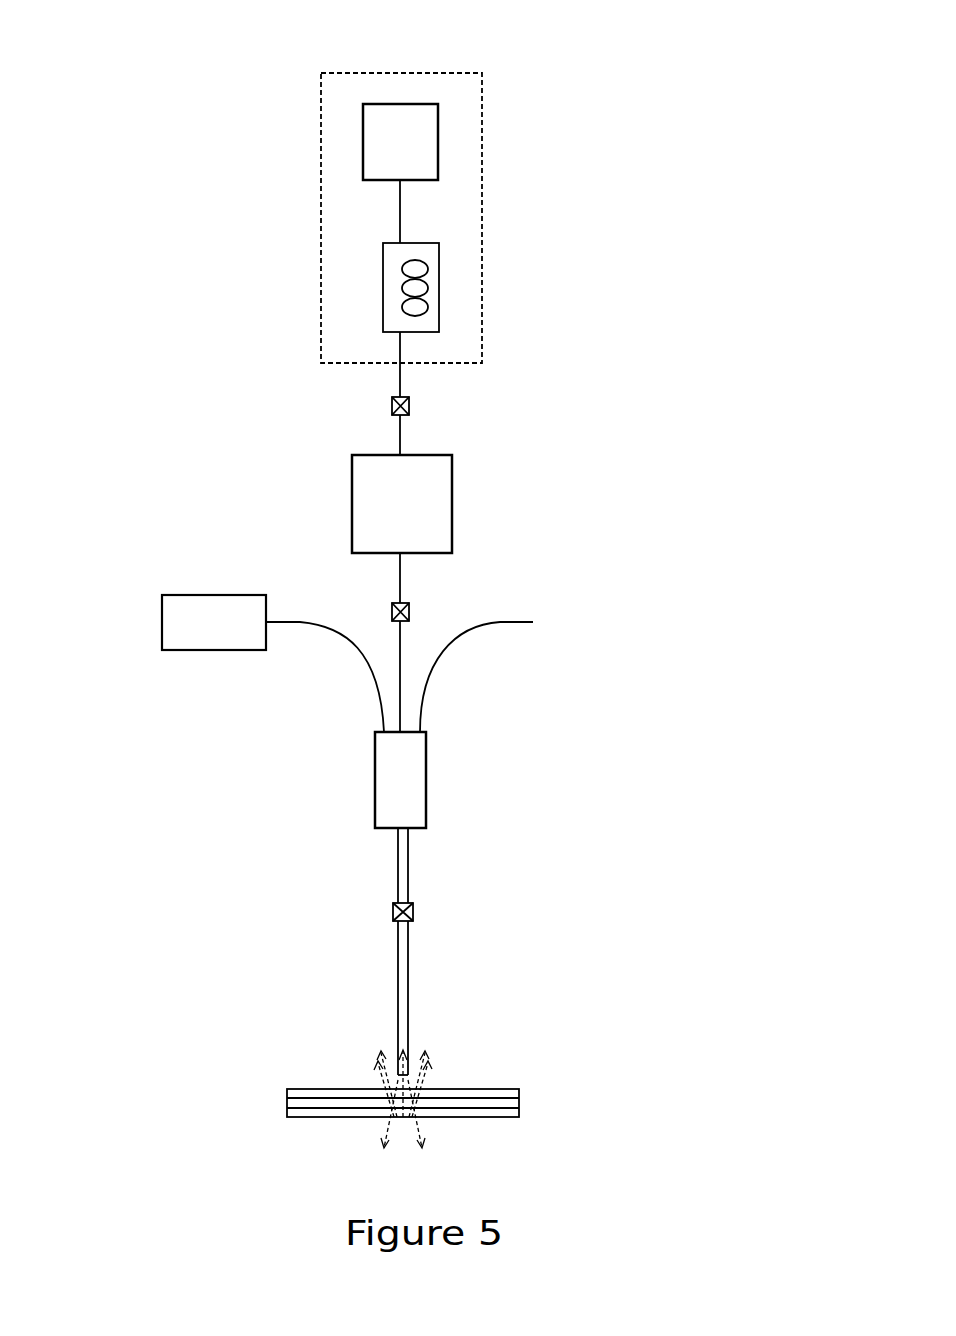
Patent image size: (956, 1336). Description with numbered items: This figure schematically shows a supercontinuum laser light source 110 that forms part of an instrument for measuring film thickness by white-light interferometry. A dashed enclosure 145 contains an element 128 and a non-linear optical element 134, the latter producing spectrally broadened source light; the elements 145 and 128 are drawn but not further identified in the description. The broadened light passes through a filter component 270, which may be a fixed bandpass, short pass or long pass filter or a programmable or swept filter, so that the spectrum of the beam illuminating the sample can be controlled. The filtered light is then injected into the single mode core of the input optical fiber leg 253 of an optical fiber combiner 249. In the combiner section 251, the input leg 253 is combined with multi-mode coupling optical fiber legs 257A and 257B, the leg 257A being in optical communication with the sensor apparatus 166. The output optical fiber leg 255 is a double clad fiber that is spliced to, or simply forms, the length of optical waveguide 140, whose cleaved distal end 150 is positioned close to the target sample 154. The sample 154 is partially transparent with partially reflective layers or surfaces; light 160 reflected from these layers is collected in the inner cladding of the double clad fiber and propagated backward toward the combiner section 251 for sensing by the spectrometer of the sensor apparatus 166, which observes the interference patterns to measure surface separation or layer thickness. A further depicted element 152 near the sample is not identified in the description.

The supercontinuum laser light source 110 is at (180, 352).
The gas supply assembly 145 is at (441, 73).
The gas source 128 is at (438, 146).
The non-linear optical element 134 is at (433, 288).
The filter component 270 is at (415, 507).
The input optical fiber leg 253 is at (403, 678).
The sensor apparatus 166 is at (223, 638).
The coupling optical fiber leg 257A is at (312, 623).
The coupling optical fiber leg 257B is at (513, 622).
The optical fiber combiner 249 is at (462, 738).
The combiner section 251 is at (418, 796).
The output optical fiber leg 255 is at (404, 878).
The length of optical waveguide 140 is at (397, 958).
The distal end 150 is at (408, 1045).
The light 160 is at (378, 1077).
The target sample 154 is at (519, 1098).
The plasma effluent 152 is at (418, 1138).